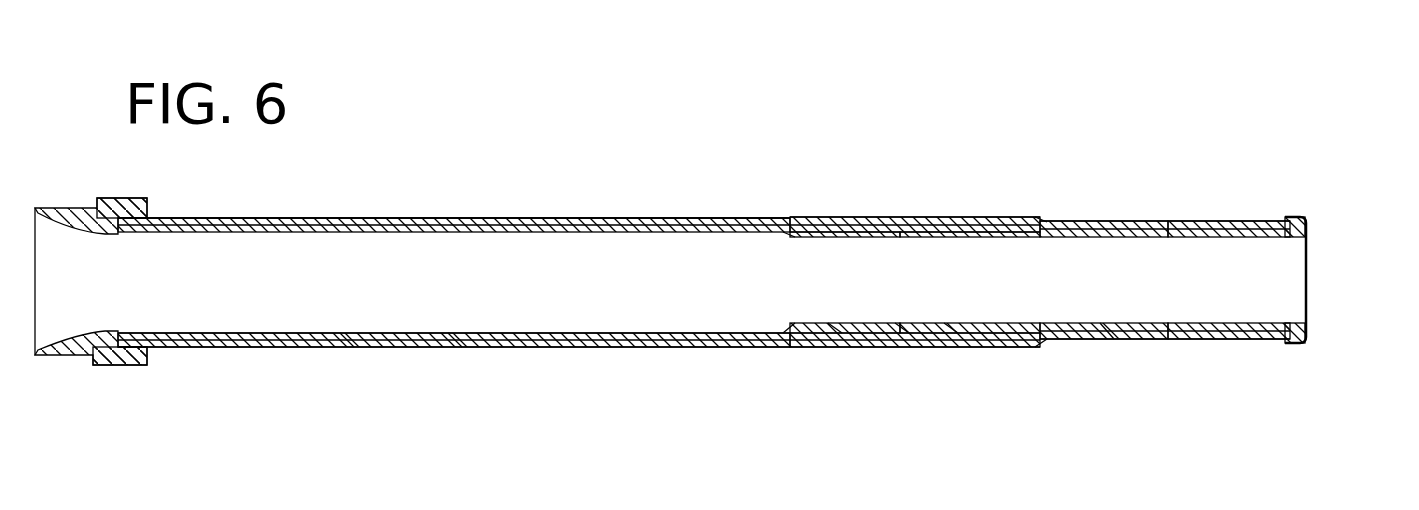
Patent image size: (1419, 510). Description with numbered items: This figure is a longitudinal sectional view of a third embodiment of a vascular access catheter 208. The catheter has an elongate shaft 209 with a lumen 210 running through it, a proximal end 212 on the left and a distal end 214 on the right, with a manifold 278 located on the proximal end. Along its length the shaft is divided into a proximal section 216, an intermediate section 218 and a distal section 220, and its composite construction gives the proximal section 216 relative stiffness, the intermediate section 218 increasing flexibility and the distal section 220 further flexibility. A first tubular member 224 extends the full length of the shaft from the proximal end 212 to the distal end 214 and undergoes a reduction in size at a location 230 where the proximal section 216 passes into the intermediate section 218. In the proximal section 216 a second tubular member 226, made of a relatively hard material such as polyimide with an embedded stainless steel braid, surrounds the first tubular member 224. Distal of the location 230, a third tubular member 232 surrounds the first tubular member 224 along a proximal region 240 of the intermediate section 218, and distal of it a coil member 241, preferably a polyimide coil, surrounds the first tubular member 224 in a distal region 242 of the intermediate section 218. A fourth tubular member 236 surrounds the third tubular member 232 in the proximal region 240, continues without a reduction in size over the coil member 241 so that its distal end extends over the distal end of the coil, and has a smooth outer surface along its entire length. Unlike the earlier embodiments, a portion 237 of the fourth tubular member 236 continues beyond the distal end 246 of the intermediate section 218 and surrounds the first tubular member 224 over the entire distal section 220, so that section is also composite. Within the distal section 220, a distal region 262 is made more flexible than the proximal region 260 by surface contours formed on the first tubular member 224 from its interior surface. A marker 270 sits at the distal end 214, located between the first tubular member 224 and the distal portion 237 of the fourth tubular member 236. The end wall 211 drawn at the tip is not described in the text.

The vascular access catheter 208 is at (545, 166).
The elongate shaft 209 is at (682, 218).
The lumen 210 is at (591, 348).
The distal end wall 211 is at (1308, 252).
The proximal end 212 is at (167, 349).
The distal end 214 is at (1278, 347).
The proximal section 216 is at (810, 198).
The intermediate section 218 is at (1023, 163).
The distal section 220 is at (1288, 163).
The first tubular member 224 is at (350, 348).
The second tubular member 226 is at (456, 348).
The location 230 is at (787, 325).
The third tubular member 232 is at (838, 347).
The fourth tubular member 236 is at (903, 348).
The portion of the fourth tubular member 237 is at (1106, 340).
The proximal region of the intermediate section 240 is at (900, 207).
The coil member 241 is at (950, 348).
The distal region of the intermediate section 242 is at (1025, 207).
The distal end of the intermediate section 246 is at (1030, 347).
The proximal region of the distal section 260 is at (1168, 207).
The distal region of the distal section 262 is at (1287, 207).
The marker 270 is at (1290, 344).
The manifold 278 is at (93, 207).